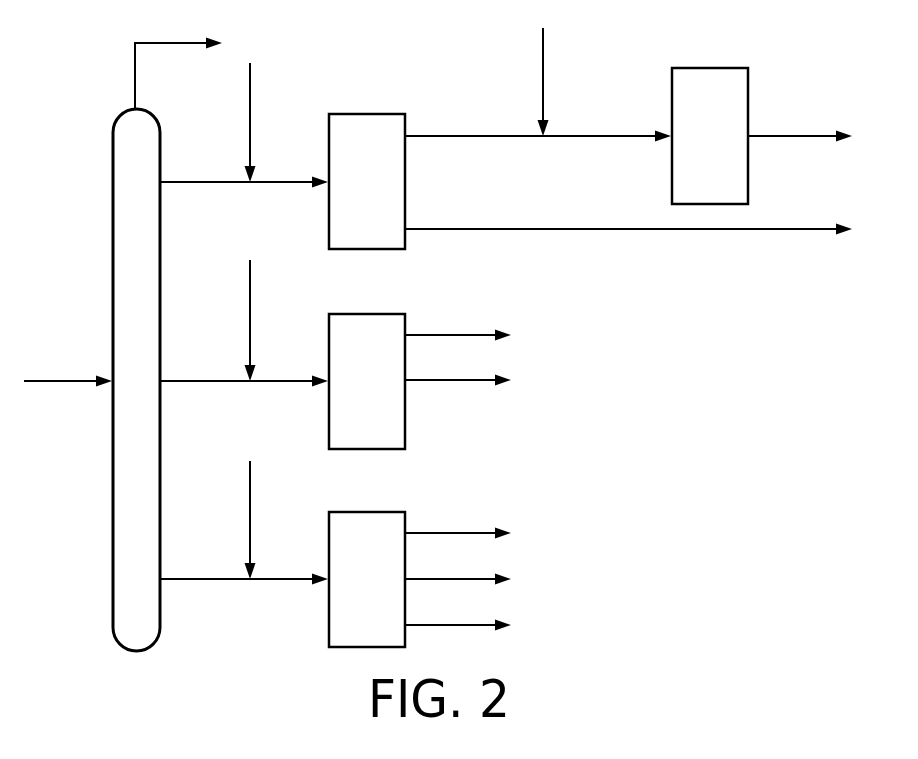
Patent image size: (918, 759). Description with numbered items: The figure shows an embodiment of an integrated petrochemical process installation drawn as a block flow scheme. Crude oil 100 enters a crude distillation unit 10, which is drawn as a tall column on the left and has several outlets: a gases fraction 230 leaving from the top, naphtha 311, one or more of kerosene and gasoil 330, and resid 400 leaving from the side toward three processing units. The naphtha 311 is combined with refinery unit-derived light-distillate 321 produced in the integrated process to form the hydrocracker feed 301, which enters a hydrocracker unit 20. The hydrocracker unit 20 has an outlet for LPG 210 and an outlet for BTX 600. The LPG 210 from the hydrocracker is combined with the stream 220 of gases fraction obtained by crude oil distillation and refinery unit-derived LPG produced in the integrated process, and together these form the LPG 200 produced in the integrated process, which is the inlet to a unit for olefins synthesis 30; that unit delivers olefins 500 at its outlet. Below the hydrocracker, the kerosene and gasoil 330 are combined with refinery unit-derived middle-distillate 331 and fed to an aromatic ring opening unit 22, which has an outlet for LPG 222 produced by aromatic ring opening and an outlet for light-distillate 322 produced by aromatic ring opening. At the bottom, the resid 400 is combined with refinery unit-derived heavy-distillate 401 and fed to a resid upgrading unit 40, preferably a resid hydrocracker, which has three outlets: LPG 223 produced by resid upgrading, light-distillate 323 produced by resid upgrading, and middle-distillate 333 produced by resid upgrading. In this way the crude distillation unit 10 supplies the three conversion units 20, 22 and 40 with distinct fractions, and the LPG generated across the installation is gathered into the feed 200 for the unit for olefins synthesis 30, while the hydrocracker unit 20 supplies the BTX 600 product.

The crude distillation unit 10 is at (136, 380).
The hydrocracker unit 20 is at (367, 181).
The aromatic ring opening unit 22 is at (367, 381).
The unit for olefins synthesis 30 is at (710, 136).
The resid upgrading unit 40 is at (367, 579).
The crude oil 100 is at (55, 381).
The LPG produced in the integrated process 200 is at (617, 136).
The LPG from hydrocracker 210 is at (473, 136).
The gases fraction obtained by crude oil distillation and refinery unit-derived LPG 220 is at (543, 48).
The LPG produced by aromatic ring opening 222 is at (476, 335).
The LPG produced by resid upgrading 223 is at (476, 533).
The gases fraction by crude oil distillation 230 is at (135, 82).
The hydrocracker feed 301 is at (291, 182).
The naphtha produced by crude oil distillation 311 is at (200, 182).
The refinery unit-derived light-distillate produced in the integrated process 321 is at (250, 83).
The light-distillate produced by aromatic ring opening 322 is at (476, 380).
The light-distillate produced by resid upgrading 323 is at (476, 579).
The one or more selected from the group consisting of kerosene and gasoil produced b 330 is at (200, 381).
The refinery unit-derived middle-distillate 331 is at (250, 282).
The middle-distillate produced by resid upgrading 333 is at (476, 625).
The resid 400 is at (200, 579).
The refinery unit-derived heavy-distillate 401 is at (250, 480).
The olefins 500 is at (803, 136).
The BTX 600 is at (803, 229).